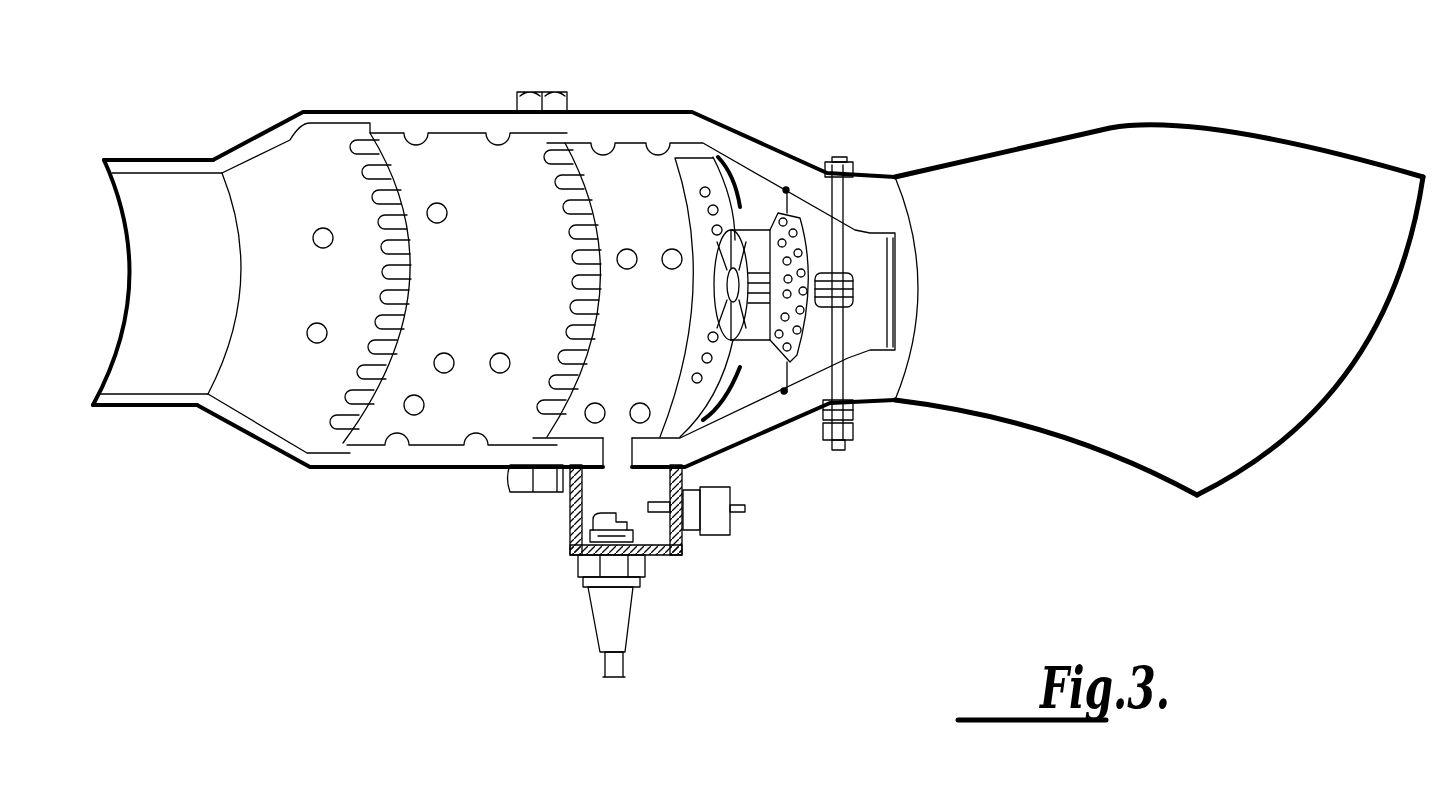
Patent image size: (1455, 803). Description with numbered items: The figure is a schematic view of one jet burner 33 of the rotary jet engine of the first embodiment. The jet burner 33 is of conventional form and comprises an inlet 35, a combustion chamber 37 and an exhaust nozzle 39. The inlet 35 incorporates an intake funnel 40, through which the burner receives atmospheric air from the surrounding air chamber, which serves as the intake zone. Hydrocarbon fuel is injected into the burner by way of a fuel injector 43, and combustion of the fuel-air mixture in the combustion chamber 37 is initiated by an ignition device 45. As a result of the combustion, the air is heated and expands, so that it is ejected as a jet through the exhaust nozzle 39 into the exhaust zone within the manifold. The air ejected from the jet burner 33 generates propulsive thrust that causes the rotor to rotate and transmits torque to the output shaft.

The jet burner 33 is at (705, 104).
The inlet 35 is at (1228, 128).
The combustion chamber 37 is at (478, 157).
The exhaust nozzle 39 is at (150, 160).
The intake funnel 40 is at (1397, 160).
The fuel injector 43 is at (857, 288).
The ignition device 45 is at (640, 590).